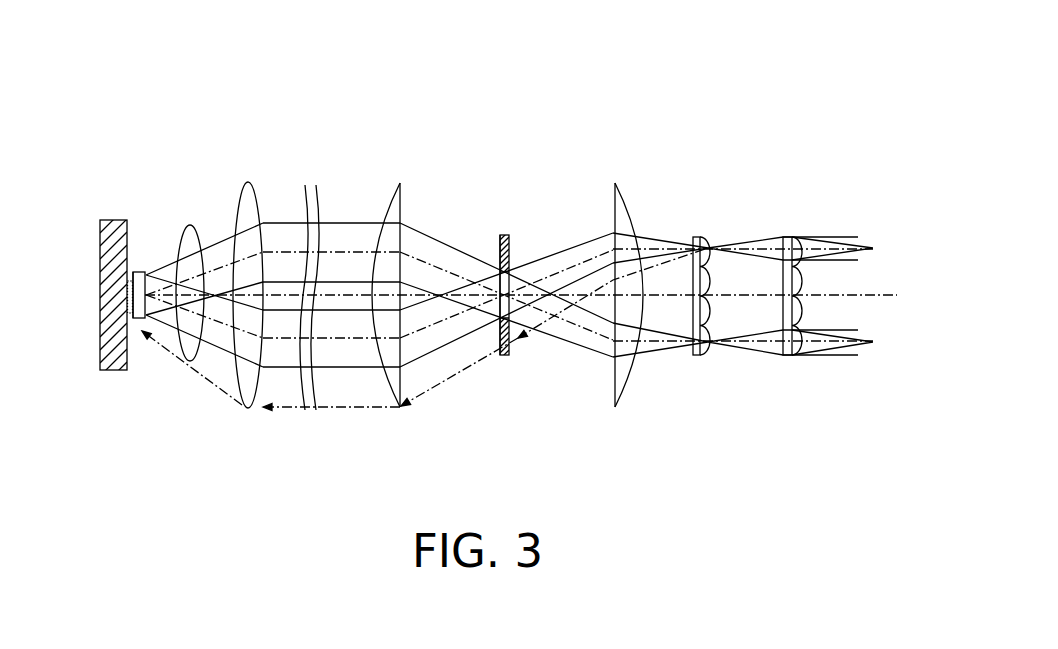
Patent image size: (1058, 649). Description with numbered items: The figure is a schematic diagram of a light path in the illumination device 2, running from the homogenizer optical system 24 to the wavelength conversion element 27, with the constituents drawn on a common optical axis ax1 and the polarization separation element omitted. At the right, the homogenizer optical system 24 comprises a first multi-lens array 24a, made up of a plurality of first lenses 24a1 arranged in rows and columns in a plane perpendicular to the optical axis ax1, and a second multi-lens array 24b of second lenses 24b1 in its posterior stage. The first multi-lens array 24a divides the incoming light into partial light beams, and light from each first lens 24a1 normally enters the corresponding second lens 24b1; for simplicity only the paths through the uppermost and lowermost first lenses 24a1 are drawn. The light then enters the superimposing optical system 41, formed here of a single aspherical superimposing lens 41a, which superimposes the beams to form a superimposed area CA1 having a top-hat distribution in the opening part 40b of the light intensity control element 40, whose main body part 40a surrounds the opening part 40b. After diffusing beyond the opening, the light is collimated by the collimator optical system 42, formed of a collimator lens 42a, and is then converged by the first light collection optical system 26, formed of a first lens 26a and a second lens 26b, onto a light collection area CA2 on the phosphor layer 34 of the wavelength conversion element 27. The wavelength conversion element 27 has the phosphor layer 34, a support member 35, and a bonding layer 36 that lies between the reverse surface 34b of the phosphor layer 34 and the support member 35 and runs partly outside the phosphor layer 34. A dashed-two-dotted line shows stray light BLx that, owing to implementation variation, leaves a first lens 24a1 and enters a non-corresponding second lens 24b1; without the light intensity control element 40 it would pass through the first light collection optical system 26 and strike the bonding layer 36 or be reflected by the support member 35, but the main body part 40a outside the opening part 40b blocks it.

The illumination device 2 is at (680, 73).
The homogenizer optical system 24 is at (802, 144).
The first multi-lens array 24a is at (806, 297).
The first lenses 24a1 is at (802, 320).
The second multi-lens array 24b is at (725, 297).
The second lenses 24b1 is at (710, 320).
The first light collection optical system 26 is at (268, 116).
The first lens 26a is at (252, 184).
The second lens 26b is at (191, 226).
The wavelength conversion element 27 is at (104, 208).
The phosphor layer 34 is at (141, 271).
The reverse surface 34b is at (127, 296).
The support member 35 is at (113, 363).
The bonding layer 36 is at (140, 333).
The light intensity control element 40 is at (506, 226).
The main body part 40a is at (498, 243).
The opening part 40b is at (512, 277).
The superimposing optical system 41 is at (631, 284).
The superimposing lens 41a is at (640, 383).
The collimator optical system 42 is at (386, 291).
The collimator lens 42a is at (380, 383).
The stray light BLx is at (490, 360).
The superimposed area CA1 is at (521, 314).
The light collection area CA2 is at (155, 314).
The optical axis ax1 is at (880, 297).